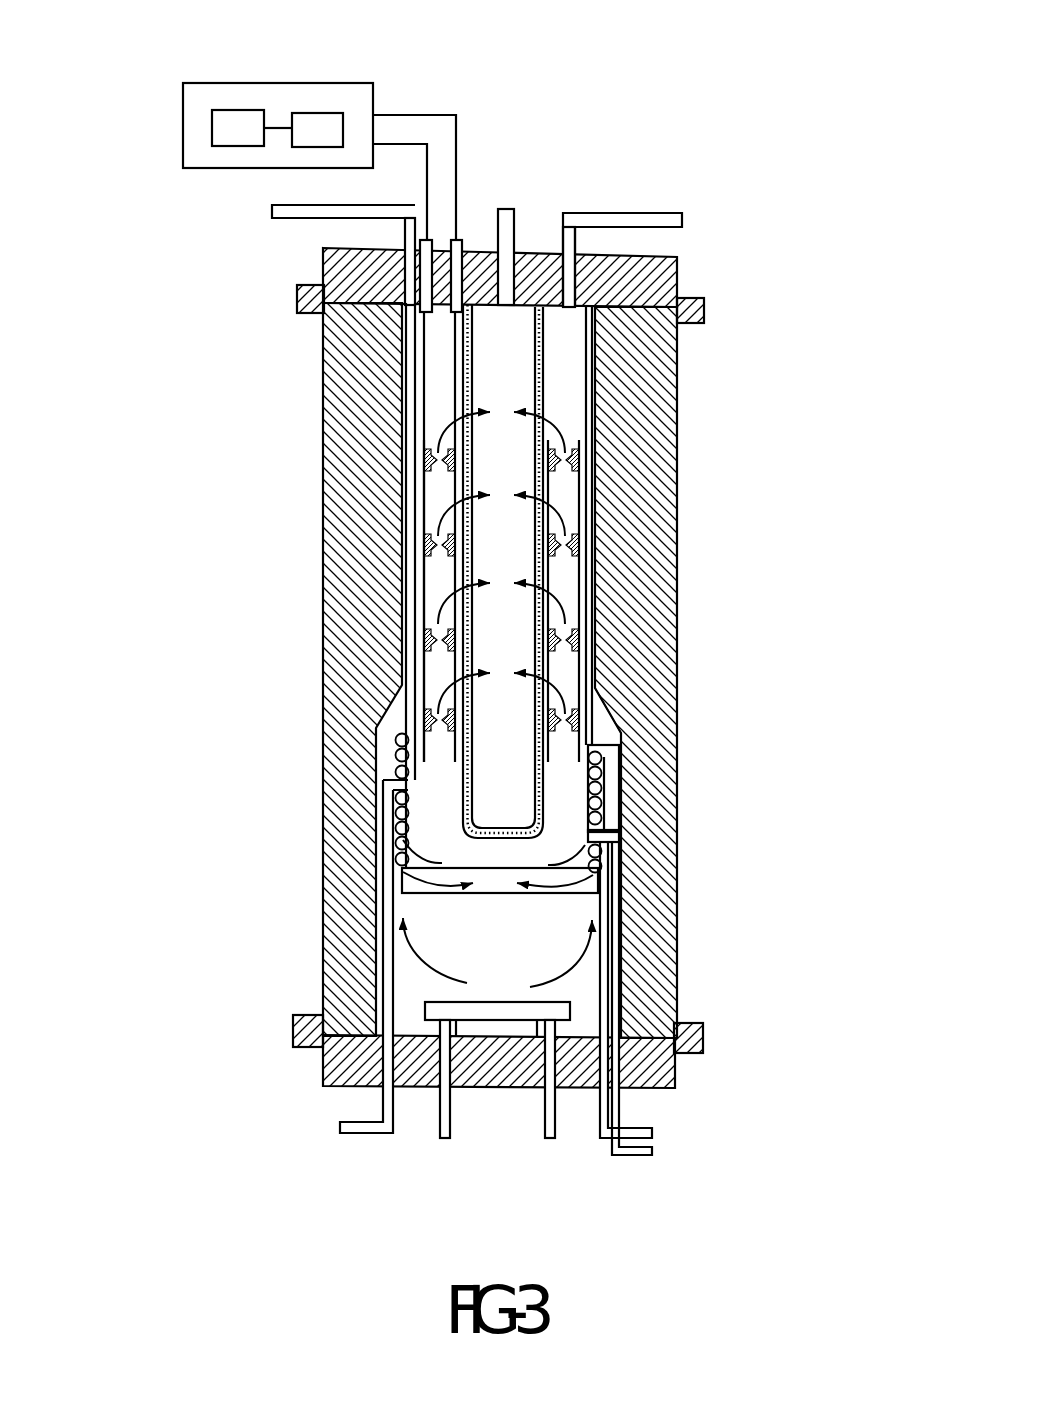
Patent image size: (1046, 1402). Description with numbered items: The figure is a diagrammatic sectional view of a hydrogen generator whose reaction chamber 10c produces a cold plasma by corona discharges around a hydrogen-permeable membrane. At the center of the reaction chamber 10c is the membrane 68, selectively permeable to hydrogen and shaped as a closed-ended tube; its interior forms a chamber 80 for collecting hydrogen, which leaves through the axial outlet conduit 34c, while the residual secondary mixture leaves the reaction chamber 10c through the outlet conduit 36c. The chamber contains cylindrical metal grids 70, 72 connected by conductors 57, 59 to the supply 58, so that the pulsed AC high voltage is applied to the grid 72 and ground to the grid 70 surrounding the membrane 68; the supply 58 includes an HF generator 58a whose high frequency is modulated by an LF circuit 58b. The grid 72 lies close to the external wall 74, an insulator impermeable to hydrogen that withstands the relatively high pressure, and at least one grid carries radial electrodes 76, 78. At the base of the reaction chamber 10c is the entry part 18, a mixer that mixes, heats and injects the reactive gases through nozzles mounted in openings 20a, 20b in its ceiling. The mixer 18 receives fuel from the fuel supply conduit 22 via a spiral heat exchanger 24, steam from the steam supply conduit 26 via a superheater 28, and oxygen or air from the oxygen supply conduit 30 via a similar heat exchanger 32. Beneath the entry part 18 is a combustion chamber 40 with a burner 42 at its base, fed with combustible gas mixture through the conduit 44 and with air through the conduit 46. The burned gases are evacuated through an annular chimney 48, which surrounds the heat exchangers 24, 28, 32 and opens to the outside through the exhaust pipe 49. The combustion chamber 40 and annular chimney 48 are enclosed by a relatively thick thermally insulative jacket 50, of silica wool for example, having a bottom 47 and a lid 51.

The supply 58 is at (278, 98).
The HF generator 58a is at (312, 130).
The LF circuit 58b is at (227, 125).
The conductor 57 is at (400, 115).
The conductor 59 is at (415, 143).
The exhaust pipe 49 is at (272, 210).
The axial outlet conduit 34c is at (506, 209).
The outlet conduit 36c is at (682, 223).
The lid 51 is at (650, 275).
The external wall 74 is at (588, 347).
The reaction chamber 10c is at (570, 398).
The membrane 68 is at (556, 430).
The metal grid 70 is at (560, 490).
The chamber for collecting hydrogen 80 is at (560, 573).
The thermally insulative jacket 50 is at (650, 607).
The radial electrode 78 is at (567, 658).
The annular chimney 48 is at (602, 727).
The metal grid 72 is at (422, 487).
The radial electrode 76 is at (427, 542).
The superheater 28 is at (390, 798).
The heat exchanger 32 is at (603, 775).
The opening 20b is at (407, 837).
The opening 20a is at (592, 848).
The spiral heat exchanger 24 is at (600, 875).
The entry part 18 is at (508, 893).
The combustion chamber 40 is at (512, 977).
The burner 42 is at (430, 1005).
The bottom 47 is at (647, 1068).
The steam supply conduit 26 is at (338, 1128).
The oxygen supply conduit 30 is at (656, 1133).
The fuel supply conduit 22 is at (656, 1151).
The air conduit 46 is at (445, 1141).
The combustible gas conduit 44 is at (550, 1141).